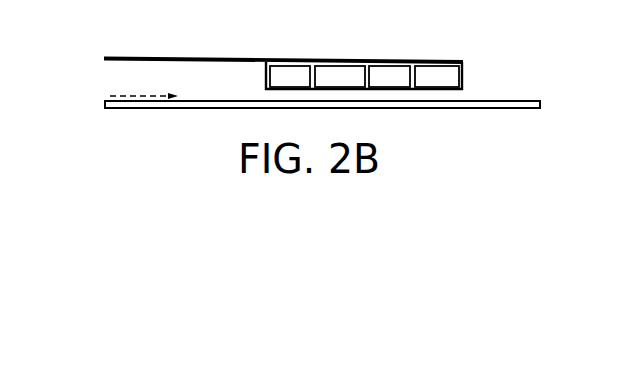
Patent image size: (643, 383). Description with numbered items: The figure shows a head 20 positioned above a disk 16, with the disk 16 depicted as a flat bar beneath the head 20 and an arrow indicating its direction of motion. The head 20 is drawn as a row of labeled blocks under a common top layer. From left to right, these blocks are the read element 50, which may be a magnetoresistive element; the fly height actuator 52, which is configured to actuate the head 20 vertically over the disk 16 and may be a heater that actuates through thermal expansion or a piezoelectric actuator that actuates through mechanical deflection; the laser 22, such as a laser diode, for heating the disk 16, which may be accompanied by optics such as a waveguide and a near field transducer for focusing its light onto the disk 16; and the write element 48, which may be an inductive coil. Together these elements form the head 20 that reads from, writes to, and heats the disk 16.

The disk 16 is at (550, 100).
The head 20 is at (486, 60).
The read element 50 is at (290, 61).
The fly height actuator 52 is at (344, 61).
The laser 22 is at (387, 61).
The write element 48 is at (452, 61).